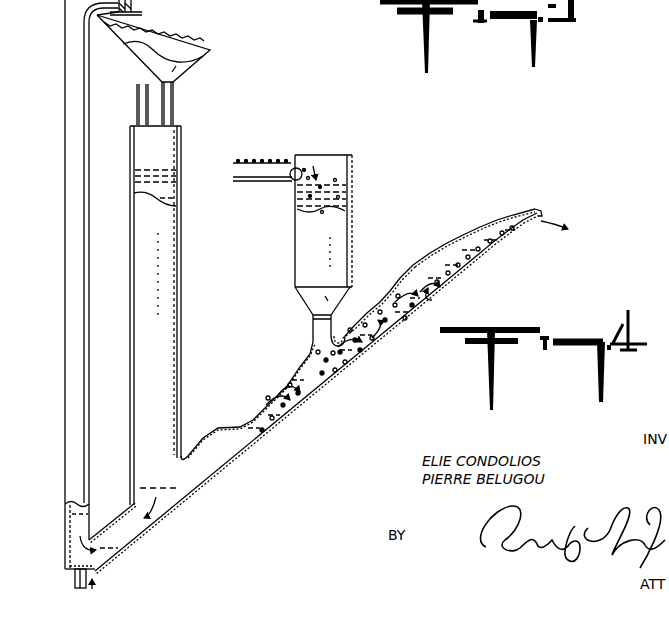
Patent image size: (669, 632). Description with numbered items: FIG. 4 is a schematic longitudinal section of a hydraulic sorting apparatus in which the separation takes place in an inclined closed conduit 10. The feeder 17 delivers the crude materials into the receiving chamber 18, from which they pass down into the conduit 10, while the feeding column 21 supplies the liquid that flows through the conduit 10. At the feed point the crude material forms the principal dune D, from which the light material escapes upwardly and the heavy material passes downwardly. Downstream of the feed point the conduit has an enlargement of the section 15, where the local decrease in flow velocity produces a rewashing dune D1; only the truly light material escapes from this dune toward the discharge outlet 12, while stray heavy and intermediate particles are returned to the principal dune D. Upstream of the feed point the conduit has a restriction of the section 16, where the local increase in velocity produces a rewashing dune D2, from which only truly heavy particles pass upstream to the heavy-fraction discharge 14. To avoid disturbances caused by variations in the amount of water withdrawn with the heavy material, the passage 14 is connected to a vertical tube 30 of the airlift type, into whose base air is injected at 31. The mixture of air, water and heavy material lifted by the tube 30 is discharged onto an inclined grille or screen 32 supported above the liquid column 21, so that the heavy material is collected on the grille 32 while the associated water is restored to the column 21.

The inclined closed conduit 10 is at (385, 296).
The discharge outlet for the liquid and the light material 12 is at (543, 200).
The discharge outlet for the heavy fraction 14 is at (138, 534).
The enlargement of the section 15 is at (428, 257).
The restriction of the section 16 is at (252, 420).
The feeder 17 is at (265, 160).
The receiving chamber 18 is at (351, 223).
The feeding column 21 is at (175, 271).
The vertical tube 30 is at (65, 222).
The air injection point at base of tube 31 is at (74, 579).
The inclined grille or screen 32 is at (168, 37).
The principal dune D is at (358, 356).
The rewashing dune D1 is at (430, 293).
The rewashing dune D2 is at (292, 405).